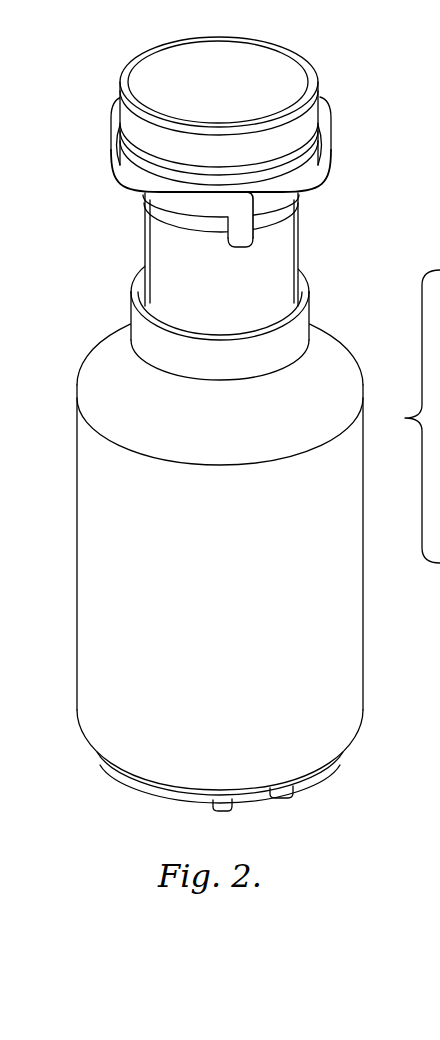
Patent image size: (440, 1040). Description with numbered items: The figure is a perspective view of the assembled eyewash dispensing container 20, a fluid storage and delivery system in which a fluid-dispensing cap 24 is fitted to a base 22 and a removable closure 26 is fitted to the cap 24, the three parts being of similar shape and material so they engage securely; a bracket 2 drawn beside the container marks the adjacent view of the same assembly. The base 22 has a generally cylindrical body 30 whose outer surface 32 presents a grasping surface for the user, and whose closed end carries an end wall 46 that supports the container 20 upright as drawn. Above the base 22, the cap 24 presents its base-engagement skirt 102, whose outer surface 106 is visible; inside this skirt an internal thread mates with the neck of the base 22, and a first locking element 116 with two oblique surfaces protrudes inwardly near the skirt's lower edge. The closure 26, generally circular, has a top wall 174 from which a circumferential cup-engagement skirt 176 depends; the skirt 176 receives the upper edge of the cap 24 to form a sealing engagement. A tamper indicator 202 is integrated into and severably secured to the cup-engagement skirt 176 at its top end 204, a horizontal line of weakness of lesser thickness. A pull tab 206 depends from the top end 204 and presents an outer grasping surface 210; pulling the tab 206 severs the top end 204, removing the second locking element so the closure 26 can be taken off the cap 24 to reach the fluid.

The container assembly 2 is at (422, 416).
The eyewash dispensing container 20 is at (225, 145).
The base 22 is at (74, 489).
The fluid-dispensing cap 24 is at (302, 240).
The closure 26 is at (303, 42).
The body 30 is at (74, 568).
The outer surface 32 is at (103, 672).
The end wall 46 is at (152, 801).
The base-engagement skirt 102 is at (157, 252).
The outer surface 106 is at (161, 280).
The first locking element 116 is at (145, 337).
The top wall 174 is at (218, 50).
The cup-engagement skirt 176 is at (323, 100).
The tamper indicator 202 is at (126, 187).
The top end 204 is at (121, 117).
The pull tab 206 is at (250, 248).
The outer grasping surface 210 is at (241, 225).